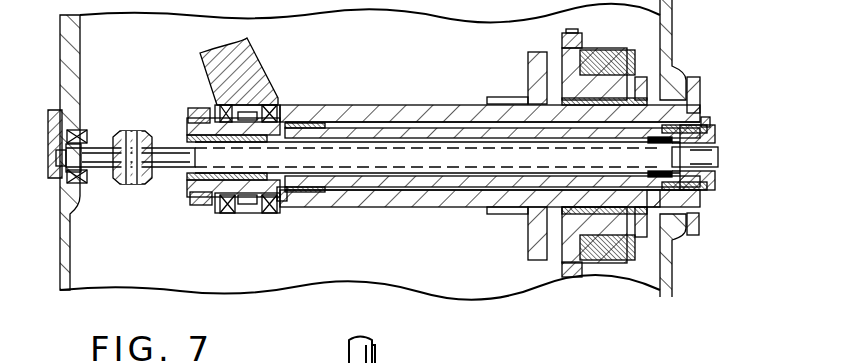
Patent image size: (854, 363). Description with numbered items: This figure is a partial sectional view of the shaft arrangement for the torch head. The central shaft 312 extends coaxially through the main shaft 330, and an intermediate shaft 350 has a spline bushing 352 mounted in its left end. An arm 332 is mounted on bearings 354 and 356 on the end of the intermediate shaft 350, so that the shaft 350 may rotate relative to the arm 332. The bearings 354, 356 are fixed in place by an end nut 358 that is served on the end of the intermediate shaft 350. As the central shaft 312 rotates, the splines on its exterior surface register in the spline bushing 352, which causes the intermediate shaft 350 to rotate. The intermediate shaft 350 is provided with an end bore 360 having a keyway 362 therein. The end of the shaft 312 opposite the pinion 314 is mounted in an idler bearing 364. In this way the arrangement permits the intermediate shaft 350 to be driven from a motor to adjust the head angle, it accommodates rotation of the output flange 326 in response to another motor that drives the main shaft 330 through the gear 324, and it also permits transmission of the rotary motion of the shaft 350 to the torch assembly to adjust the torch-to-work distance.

The central shaft 312 is at (167, 150).
The pinion 314 is at (137, 184).
The gear 324 is at (570, 30).
The output flange 326 is at (700, 90).
The main shaft 330 is at (424, 89).
The arm 332 is at (258, 75).
The intermediate shaft 350 is at (397, 183).
The spline bushing 352 is at (199, 205).
The bearing 354 is at (280, 210).
The bearing 356 is at (228, 213).
The end nut 358 is at (197, 108).
The end bore 360 is at (712, 157).
The keyway 362 is at (710, 133).
The idler bearing 364 is at (698, 206).